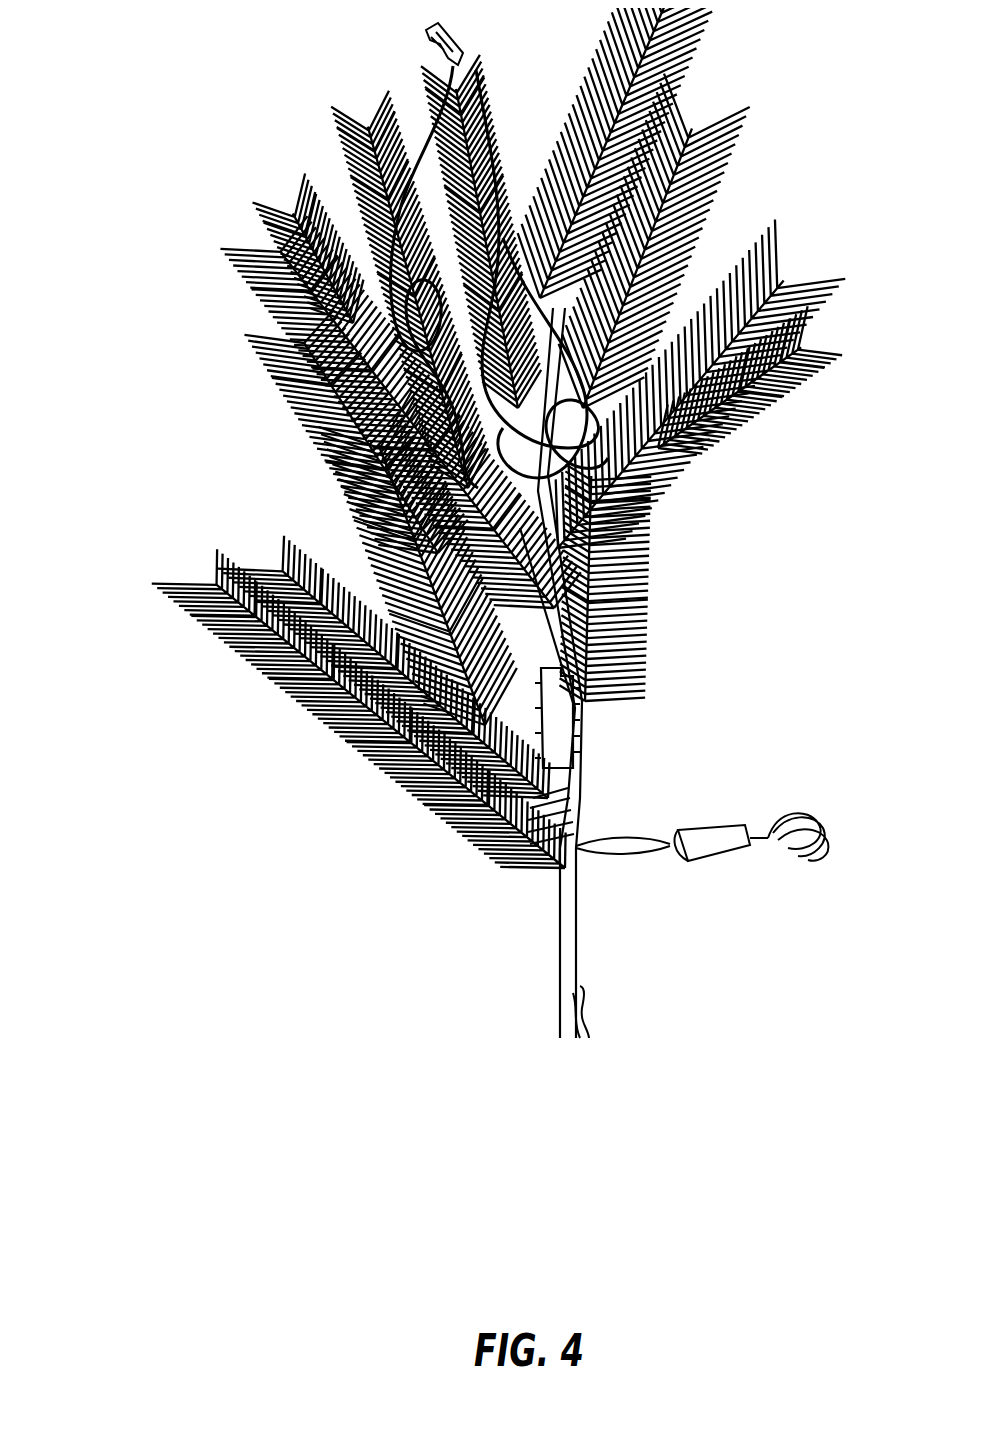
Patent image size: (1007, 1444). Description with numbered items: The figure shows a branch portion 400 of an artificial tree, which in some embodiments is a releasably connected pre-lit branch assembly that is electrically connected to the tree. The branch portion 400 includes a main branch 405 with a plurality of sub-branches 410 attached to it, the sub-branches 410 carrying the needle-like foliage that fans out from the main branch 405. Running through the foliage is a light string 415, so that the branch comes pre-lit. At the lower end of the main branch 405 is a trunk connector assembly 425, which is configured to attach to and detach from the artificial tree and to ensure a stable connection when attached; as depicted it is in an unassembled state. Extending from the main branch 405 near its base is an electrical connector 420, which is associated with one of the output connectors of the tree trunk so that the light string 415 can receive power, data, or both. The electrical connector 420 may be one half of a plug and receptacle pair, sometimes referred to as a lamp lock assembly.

The branch portion 400 is at (163, 107).
The main branch 405 is at (565, 686).
The sub-branches 410 is at (785, 262).
The light string 415 is at (420, 42).
The electrical connector 420 is at (683, 853).
The trunk connector assembly 425 is at (580, 1000).